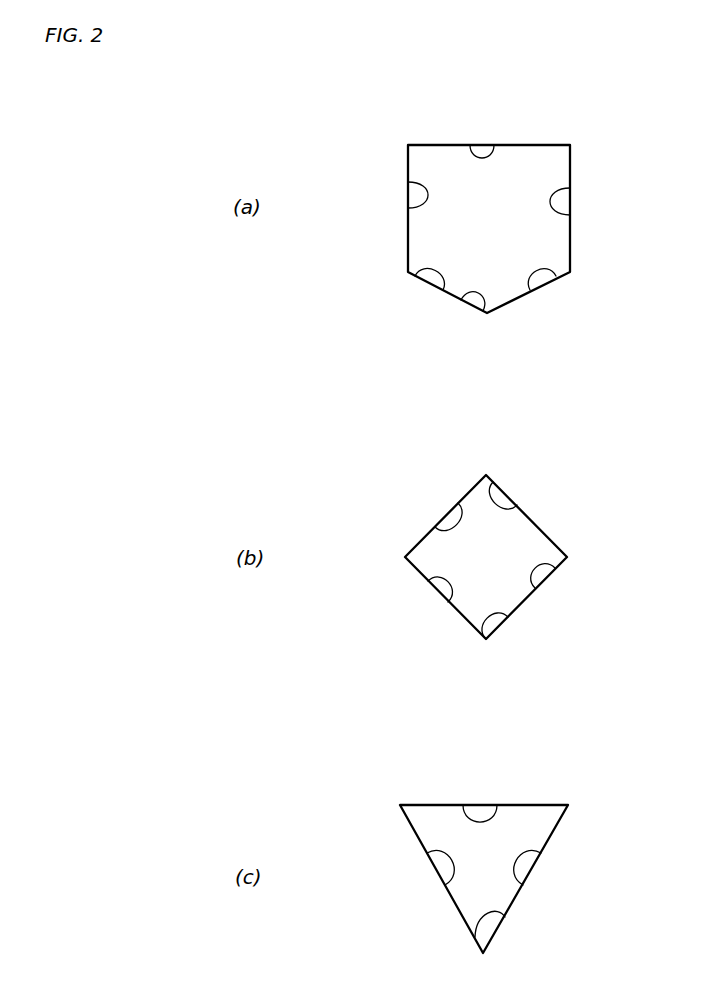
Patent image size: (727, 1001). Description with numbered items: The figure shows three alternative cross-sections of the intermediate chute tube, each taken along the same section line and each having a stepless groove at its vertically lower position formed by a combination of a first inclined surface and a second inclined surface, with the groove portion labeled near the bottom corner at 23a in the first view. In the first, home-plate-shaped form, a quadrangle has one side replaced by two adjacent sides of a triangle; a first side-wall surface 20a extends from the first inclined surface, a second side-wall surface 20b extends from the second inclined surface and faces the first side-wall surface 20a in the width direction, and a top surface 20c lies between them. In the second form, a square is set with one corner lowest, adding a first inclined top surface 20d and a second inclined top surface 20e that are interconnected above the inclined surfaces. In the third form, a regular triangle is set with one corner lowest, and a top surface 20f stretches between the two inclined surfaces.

The first side-wall surface 20a is at (420, 204).
The second side-wall surface 20b is at (572, 213).
The top surface 20c is at (492, 157).
The first inclined top surface 20d is at (450, 528).
The second inclined top surface 20e is at (502, 508).
The top surface 20f is at (463, 806).
The tip apex 23a is at (488, 302).